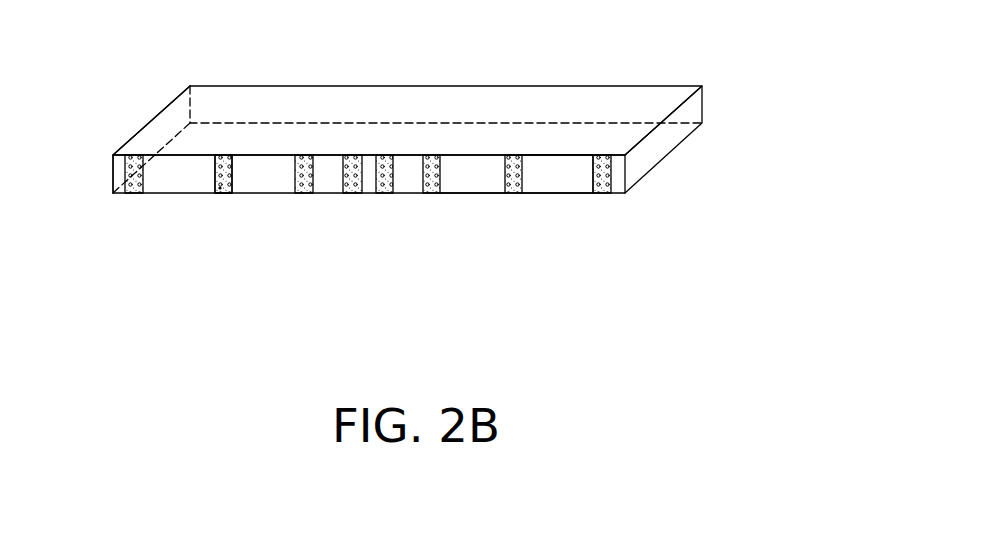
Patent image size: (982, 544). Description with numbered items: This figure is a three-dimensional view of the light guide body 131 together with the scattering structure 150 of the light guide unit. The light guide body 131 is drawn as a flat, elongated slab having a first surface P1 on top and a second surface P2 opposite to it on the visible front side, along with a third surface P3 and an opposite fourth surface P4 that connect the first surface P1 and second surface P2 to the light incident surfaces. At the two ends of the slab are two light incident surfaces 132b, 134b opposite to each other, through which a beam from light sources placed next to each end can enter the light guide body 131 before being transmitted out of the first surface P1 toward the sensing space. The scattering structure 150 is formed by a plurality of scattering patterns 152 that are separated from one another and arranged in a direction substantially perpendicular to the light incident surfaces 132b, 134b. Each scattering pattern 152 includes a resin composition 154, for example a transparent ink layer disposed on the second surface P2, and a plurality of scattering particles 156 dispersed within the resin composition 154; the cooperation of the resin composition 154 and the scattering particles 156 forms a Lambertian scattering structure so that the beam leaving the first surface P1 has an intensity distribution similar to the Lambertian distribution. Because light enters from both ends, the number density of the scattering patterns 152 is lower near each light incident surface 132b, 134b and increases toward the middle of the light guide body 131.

The light guide body 131 is at (577, 182).
The scattering structure 150 is at (383, 205).
The scattering patterns 152 is at (241, 233).
The resin composition 154 is at (230, 175).
The scattering particles 156 is at (220, 190).
The light incident surface 132b is at (152, 118).
The light incident surface 134b is at (660, 147).
The first surface P1 is at (375, 83).
The second surface P2 is at (550, 175).
The third surface P3 is at (515, 103).
The fourth surface P4 is at (473, 195).